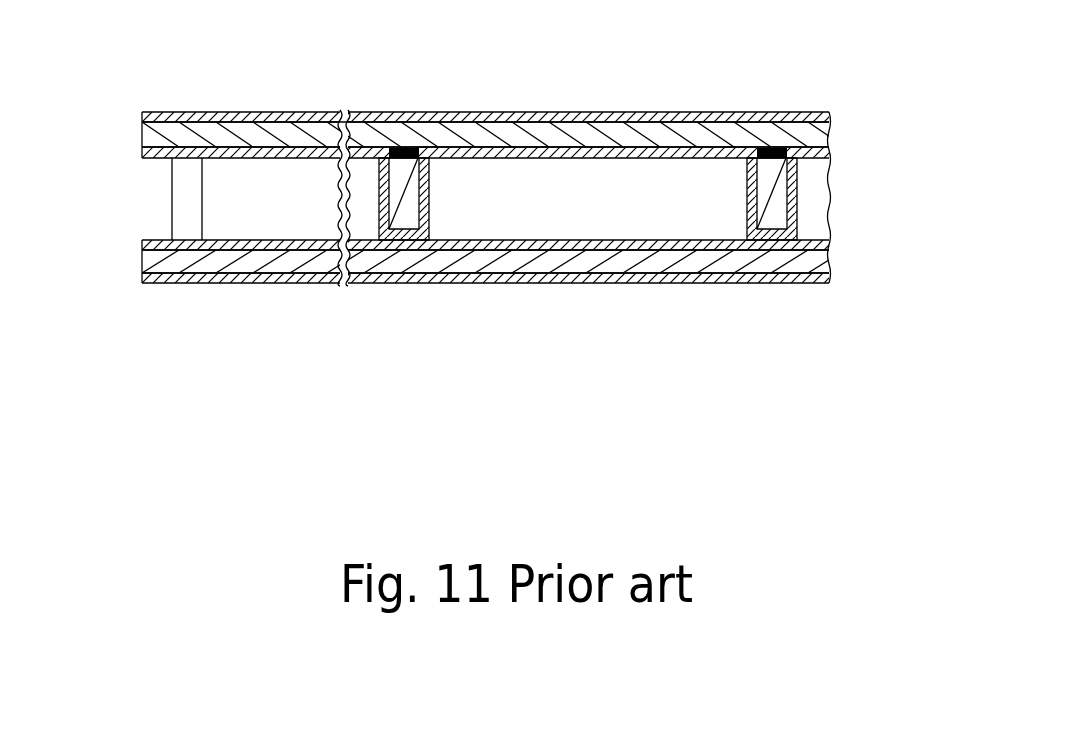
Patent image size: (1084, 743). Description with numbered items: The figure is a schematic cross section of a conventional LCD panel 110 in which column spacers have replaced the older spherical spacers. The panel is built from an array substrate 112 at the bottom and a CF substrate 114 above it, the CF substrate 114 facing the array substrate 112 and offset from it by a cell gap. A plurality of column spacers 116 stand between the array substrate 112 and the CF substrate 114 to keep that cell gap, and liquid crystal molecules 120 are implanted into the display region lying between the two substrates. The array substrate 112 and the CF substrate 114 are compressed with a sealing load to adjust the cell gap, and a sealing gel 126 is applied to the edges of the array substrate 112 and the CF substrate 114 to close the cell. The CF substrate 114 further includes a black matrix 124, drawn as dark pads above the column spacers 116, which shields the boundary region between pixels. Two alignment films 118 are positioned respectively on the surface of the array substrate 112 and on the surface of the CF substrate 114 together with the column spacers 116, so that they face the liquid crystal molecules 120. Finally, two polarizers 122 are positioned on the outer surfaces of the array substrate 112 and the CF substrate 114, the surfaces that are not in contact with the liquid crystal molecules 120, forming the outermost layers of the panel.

The LCD panel 110 is at (760, 69).
The array substrate 112 is at (155, 261).
The CF substrate 114 is at (155, 133).
The column spacer 116 is at (400, 213).
The alignment film 118 is at (829, 152).
The liquid crystal molecules 120 is at (257, 182).
The polarizer 122 is at (826, 116).
The black matrix 124 is at (768, 150).
The sealing gel 126 is at (182, 205).